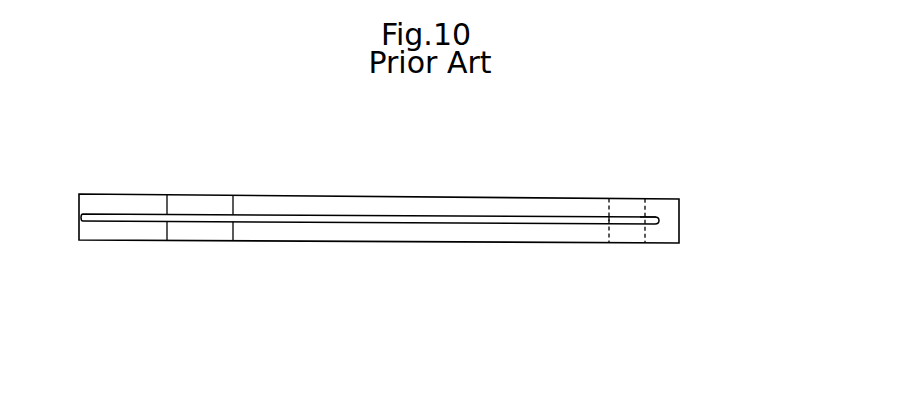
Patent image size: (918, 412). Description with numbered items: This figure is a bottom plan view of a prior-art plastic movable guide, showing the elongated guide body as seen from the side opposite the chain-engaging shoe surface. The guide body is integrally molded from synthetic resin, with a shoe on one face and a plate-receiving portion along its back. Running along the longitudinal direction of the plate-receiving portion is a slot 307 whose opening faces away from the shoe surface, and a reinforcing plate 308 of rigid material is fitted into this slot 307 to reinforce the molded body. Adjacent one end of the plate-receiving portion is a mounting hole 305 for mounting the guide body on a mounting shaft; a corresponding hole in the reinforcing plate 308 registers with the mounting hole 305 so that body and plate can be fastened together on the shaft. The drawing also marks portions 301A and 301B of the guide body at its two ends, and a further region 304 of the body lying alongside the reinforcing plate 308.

The substrate 304 is at (377, 208).
The reinforcing plate 308 is at (463, 219).
The first section 301B is at (205, 193).
The second section 301A is at (641, 194).
The mounting hole 305 is at (632, 231).
The slot 307 is at (492, 222).